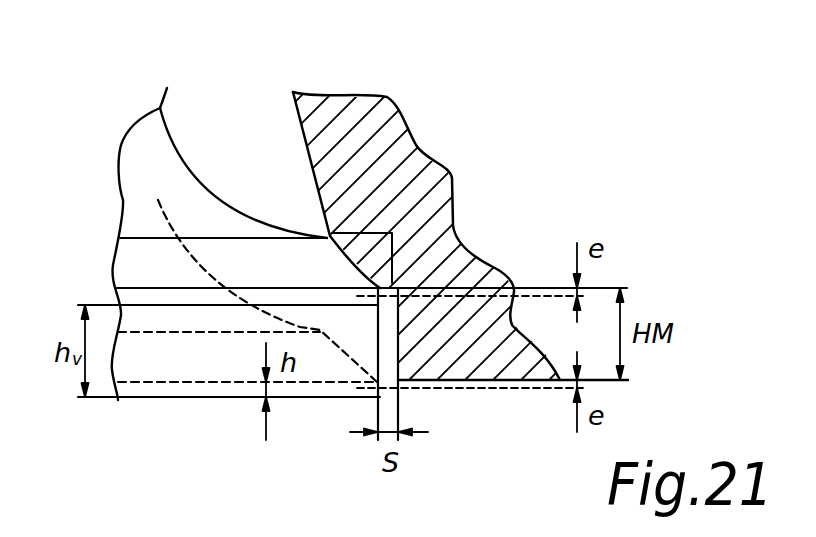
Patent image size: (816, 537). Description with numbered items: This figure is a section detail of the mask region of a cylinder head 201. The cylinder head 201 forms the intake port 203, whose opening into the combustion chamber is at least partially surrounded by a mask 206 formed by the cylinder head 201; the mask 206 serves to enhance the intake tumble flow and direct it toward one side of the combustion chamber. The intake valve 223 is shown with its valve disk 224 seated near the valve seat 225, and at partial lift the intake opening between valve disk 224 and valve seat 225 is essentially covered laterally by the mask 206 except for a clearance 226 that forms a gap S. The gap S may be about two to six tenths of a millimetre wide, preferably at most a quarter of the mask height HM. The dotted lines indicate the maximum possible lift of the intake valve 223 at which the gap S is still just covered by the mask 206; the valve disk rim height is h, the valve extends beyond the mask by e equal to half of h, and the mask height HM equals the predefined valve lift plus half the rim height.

The cylinder head 201 is at (412, 98).
The intake port 203 is at (233, 127).
The mask 206 is at (473, 365).
The intake valve 223 is at (137, 163).
The valve disk 224 is at (142, 298).
The valve seat 225 is at (372, 255).
The clearance 226 is at (387, 333).